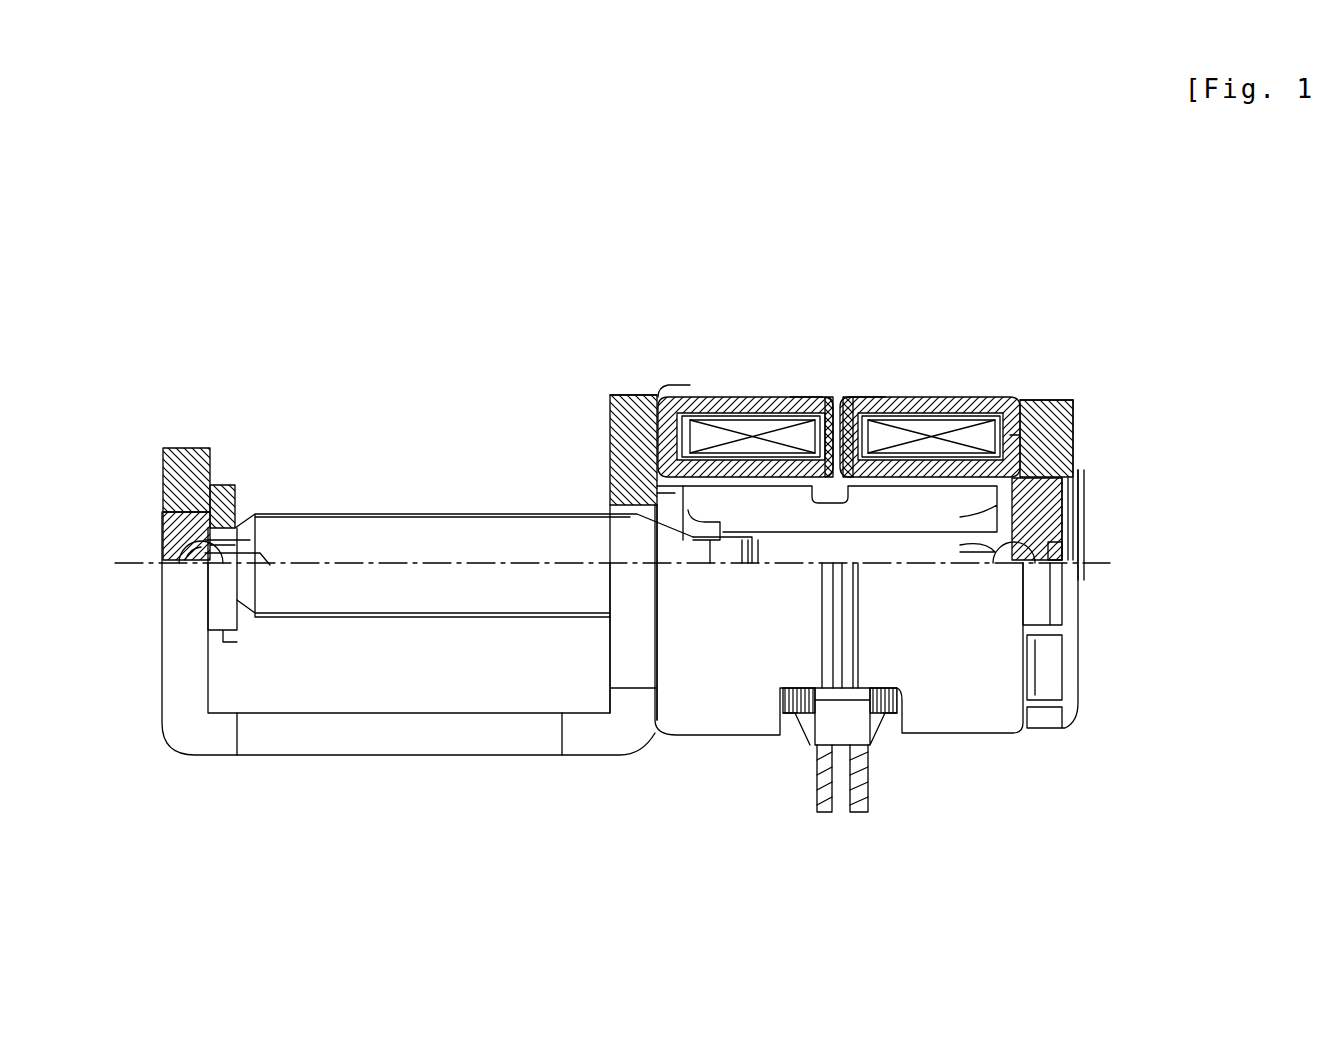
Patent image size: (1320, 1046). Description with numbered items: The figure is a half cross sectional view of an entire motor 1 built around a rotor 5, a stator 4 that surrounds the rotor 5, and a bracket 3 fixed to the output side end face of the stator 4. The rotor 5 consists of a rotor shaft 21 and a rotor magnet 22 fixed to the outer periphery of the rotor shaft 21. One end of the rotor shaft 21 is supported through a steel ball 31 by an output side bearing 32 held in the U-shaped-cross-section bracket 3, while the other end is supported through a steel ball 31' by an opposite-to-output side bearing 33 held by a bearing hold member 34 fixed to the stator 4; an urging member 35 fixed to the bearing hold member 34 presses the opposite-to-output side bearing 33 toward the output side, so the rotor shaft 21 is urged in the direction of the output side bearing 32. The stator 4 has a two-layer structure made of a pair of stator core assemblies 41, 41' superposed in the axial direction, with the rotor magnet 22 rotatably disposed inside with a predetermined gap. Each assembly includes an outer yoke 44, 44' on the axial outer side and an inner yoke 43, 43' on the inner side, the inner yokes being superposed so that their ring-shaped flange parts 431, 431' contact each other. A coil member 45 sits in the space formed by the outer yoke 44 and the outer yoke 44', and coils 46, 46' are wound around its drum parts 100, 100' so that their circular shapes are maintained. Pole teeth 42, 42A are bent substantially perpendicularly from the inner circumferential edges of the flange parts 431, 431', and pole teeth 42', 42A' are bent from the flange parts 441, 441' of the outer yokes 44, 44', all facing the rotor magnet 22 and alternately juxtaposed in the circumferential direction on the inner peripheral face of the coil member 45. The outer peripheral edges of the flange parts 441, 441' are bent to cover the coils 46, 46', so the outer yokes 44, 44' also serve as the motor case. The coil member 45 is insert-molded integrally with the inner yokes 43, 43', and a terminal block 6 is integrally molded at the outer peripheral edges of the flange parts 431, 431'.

The motor 1 is at (131, 410).
The bracket 3 is at (200, 745).
The stator 4 is at (755, 443).
The rotor 5 is at (672, 490).
The terminal block 6 is at (836, 838).
The rotor shaft 21 is at (405, 530).
The rotor magnet 22 is at (742, 520).
The steel ball 31 is at (150, 535).
The steel ball 31' is at (1074, 542).
The output side bearing 32 is at (221, 483).
The opposite-to-output side bearing 33 is at (1082, 488).
The bearing hold member 34 is at (1077, 415).
The urging member 35 is at (1084, 512).
The stator core assembly 41 is at (725, 478).
The stator core assembly 41' is at (961, 461).
The pole teeth 42 is at (574, 414).
The pole teeth 42' is at (1046, 438).
The pole teeth 42A is at (1134, 337).
The pole teeth 42A' is at (1162, 397).
The inner yoke 43 is at (800, 319).
The inner yoke 43' is at (884, 318).
The outer yoke 44 is at (725, 515).
The outer yoke 44' is at (1037, 497).
The coil member 45 is at (665, 382).
The coil 46 is at (751, 309).
The coil 46' is at (932, 308).
The drum part 100 is at (777, 653).
The drum part 100' is at (915, 653).
The flange part 431 is at (777, 344).
The flange part 431' is at (901, 344).
The flange part 441 is at (570, 329).
The flange part 441' is at (1071, 328).